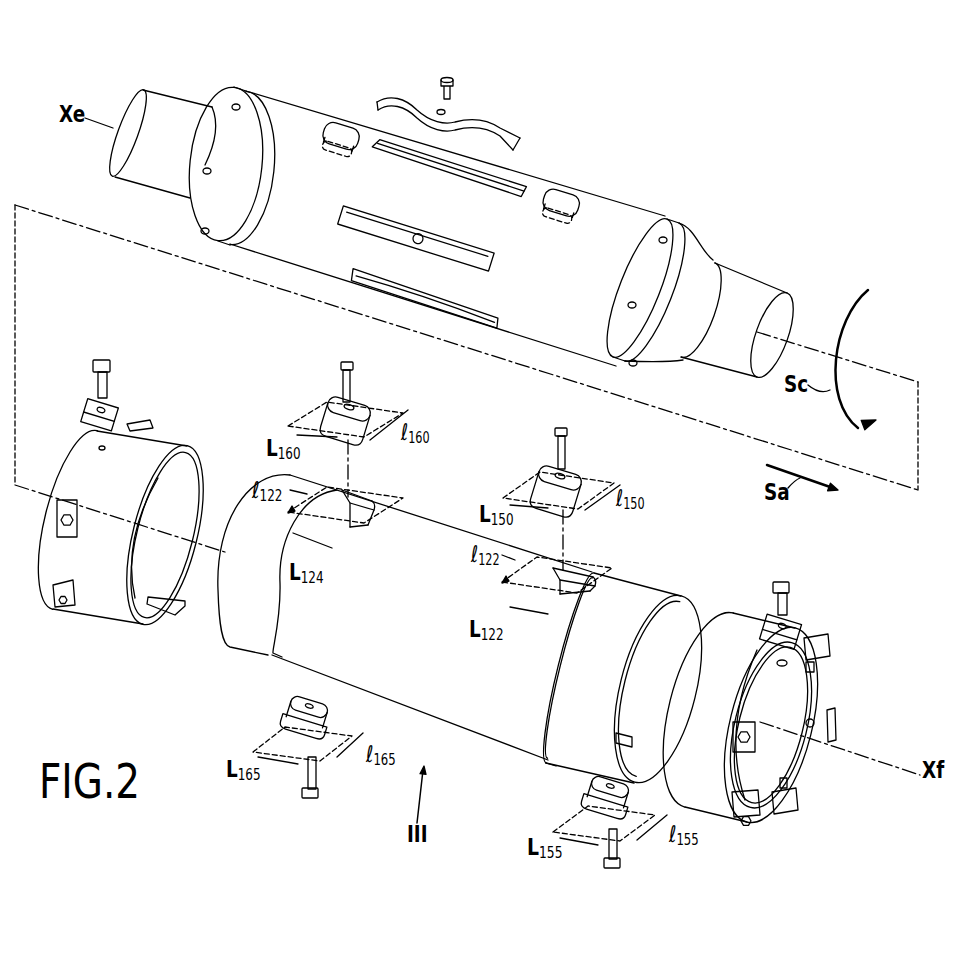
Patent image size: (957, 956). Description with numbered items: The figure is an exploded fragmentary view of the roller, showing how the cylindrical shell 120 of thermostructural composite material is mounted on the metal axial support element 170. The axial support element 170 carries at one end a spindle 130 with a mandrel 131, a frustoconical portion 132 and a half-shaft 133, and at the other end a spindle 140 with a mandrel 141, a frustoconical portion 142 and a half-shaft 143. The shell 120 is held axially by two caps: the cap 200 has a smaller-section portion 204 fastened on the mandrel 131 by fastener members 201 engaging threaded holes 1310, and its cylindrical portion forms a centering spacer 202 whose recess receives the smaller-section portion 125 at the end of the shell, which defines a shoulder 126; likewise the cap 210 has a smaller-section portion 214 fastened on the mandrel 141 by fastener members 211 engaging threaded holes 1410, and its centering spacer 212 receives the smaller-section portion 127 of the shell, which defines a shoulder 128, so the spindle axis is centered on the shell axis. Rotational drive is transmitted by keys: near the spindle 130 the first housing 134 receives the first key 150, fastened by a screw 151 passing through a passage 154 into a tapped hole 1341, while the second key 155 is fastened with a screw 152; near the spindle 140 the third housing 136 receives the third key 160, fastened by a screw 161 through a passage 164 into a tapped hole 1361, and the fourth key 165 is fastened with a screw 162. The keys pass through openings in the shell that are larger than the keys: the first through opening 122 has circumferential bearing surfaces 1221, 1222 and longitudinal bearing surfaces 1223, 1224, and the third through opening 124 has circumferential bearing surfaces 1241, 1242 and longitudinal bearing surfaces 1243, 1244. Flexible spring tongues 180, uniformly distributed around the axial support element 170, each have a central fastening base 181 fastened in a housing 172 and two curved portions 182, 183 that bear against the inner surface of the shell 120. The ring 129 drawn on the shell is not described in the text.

The cylindrical shell 120 is at (449, 624).
The first through opening 122 is at (564, 573).
The first circumferential bearing surface 1221 is at (548, 565).
The second circumferential bearing surface 1222 is at (580, 597).
The first longitudinal bearing surface 1223 is at (522, 578).
The second longitudinal bearing surface 1224 is at (590, 567).
The third through opening 124 is at (349, 506).
The first circumferential bearing surface 1241 is at (332, 495).
The second circumferential bearing surface 1242 is at (368, 525).
The first longitudinal bearing surface 1243 is at (312, 512).
The second longitudinal bearing surface 1244 is at (372, 497).
The smaller-section portion 125 is at (598, 748).
The shoulder 126 is at (558, 757).
The smaller-section portion 127 is at (240, 637).
The shoulder 128 is at (277, 657).
The ring 129 is at (575, 645).
The spindle 130 is at (698, 317).
The mandrel 131 is at (683, 228).
The threaded holes 1310 is at (640, 347).
The frustoconical portion 132 is at (707, 250).
The half-shaft 133 is at (752, 288).
The first housing 134 is at (567, 203).
The tapped hole 1341 is at (557, 233).
The third housing 136 is at (333, 130).
The tapped hole 1361 is at (333, 155).
The spindle 140 is at (197, 171).
The mandrel 141 is at (247, 96).
The threaded holes 1410 is at (203, 231).
The frustoconical portion 142 is at (200, 127).
The half-shaft 143 is at (160, 120).
The first key 150 is at (568, 475).
The screw 151 is at (560, 428).
The screw 152 is at (618, 847).
The passage 154 is at (570, 476).
The second key 155 is at (588, 802).
The third key 160 is at (353, 407).
The screw 161 is at (345, 358).
The screw 162 is at (317, 770).
The passage 164 is at (350, 410).
The fourth key 165 is at (287, 722).
The axial support element 170 is at (620, 208).
The housing 172 is at (437, 163).
The flexible spring tongue 180 is at (430, 195).
The central fastening base 181 is at (457, 118).
The curved portion 182 is at (400, 100).
The curved portion 183 is at (517, 138).
The cap 200 is at (762, 686).
The fastener members 201 is at (782, 580).
The centering spacer 202 is at (752, 615).
The smaller-section portion 204 is at (813, 700).
The cap 210 is at (121, 489).
The fastener members 211 is at (100, 356).
The centering spacer 212 is at (158, 440).
The smaller-section portion 214 is at (80, 478).